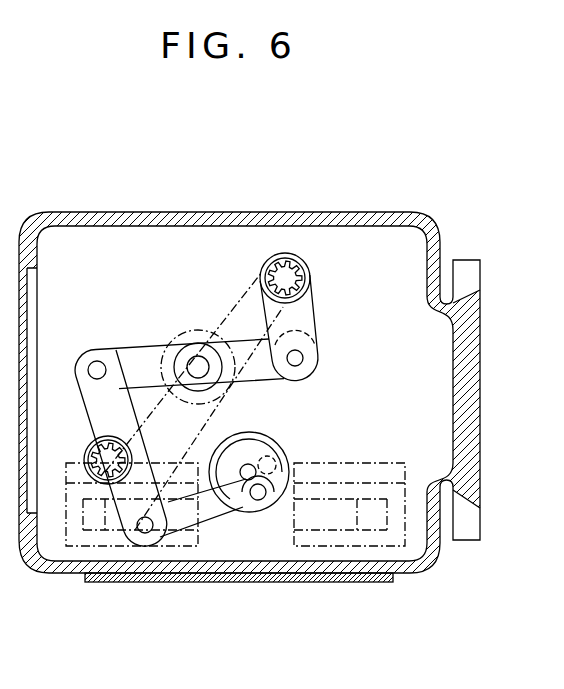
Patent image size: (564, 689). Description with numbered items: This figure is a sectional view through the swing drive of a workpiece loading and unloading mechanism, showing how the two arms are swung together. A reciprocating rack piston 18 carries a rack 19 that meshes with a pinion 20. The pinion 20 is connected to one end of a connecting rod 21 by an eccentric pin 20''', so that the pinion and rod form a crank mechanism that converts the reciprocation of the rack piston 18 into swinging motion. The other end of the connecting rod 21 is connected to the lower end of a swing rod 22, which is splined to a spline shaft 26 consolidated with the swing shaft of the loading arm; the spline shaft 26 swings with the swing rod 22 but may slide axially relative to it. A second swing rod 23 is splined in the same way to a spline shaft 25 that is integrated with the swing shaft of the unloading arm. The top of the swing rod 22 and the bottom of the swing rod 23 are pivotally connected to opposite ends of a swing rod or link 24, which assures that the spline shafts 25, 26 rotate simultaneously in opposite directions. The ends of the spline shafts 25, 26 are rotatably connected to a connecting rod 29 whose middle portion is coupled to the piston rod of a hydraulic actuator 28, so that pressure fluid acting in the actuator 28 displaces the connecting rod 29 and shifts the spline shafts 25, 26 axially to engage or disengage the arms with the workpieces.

The rack piston 18 is at (278, 533).
The rack 19 is at (298, 464).
The pinion 20 is at (249, 453).
The drive pin 20''' is at (256, 567).
The connecting rod 21 is at (218, 518).
The swing rod 22 is at (80, 400).
The swing rod 23 is at (316, 323).
The swing rod or link 24 is at (268, 381).
The spline shaft 25 is at (311, 277).
The spline shaft 26 is at (88, 452).
The hydraulic actuator 28 is at (172, 340).
The connecting rod 29 is at (237, 288).